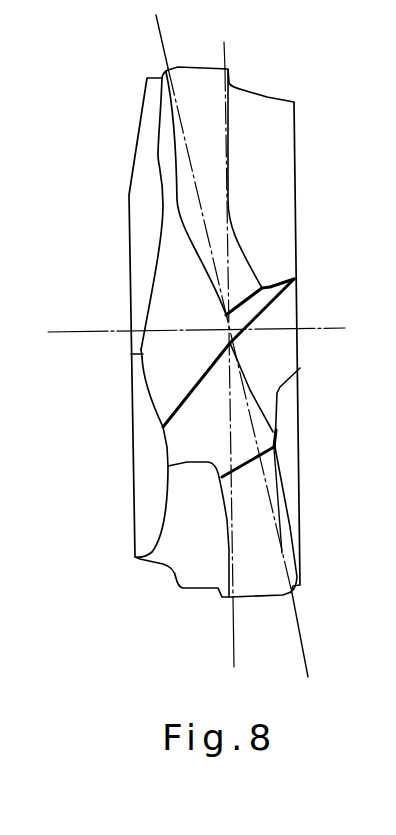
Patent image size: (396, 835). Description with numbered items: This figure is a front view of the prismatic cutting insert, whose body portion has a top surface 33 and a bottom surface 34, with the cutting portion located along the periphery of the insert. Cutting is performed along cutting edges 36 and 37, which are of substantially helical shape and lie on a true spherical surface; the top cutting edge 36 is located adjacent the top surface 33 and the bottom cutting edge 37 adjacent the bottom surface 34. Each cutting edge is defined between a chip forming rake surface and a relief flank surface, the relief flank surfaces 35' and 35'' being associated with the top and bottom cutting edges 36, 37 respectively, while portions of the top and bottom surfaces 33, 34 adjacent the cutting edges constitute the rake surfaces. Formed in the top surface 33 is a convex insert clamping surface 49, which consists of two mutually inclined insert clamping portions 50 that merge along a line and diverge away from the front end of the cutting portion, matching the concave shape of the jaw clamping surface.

The top surface 33 is at (124, 459).
The bottom surface 34 is at (300, 302).
The relief flank surface 35' is at (190, 38).
The relief flank surface 35'' is at (279, 635).
The top cutting edge 36 is at (177, 210).
The bottom cutting edge 37 is at (293, 527).
The insert clamping surface 49 is at (128, 347).
The insert clamping portions 50 is at (143, 250).